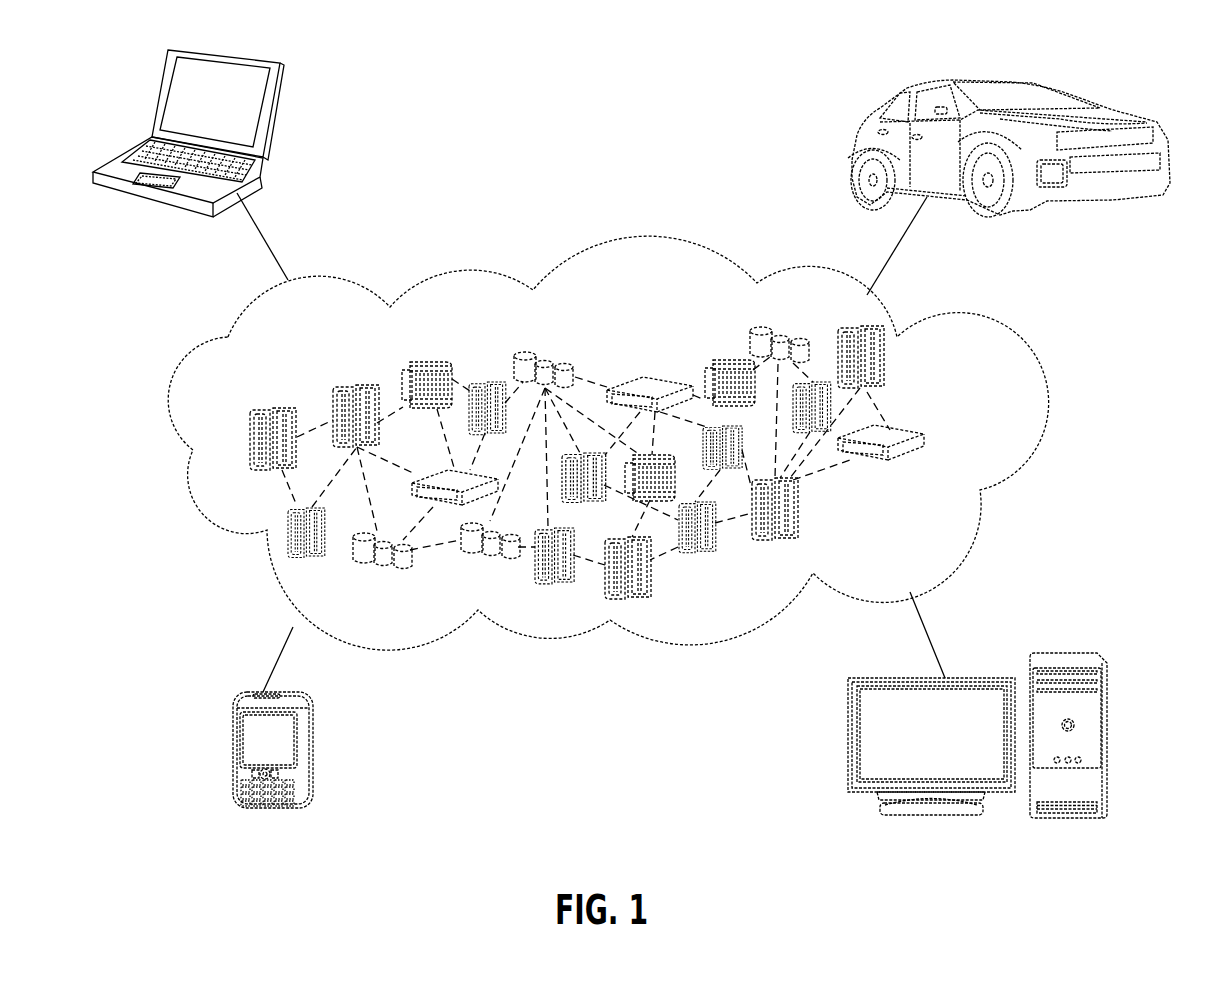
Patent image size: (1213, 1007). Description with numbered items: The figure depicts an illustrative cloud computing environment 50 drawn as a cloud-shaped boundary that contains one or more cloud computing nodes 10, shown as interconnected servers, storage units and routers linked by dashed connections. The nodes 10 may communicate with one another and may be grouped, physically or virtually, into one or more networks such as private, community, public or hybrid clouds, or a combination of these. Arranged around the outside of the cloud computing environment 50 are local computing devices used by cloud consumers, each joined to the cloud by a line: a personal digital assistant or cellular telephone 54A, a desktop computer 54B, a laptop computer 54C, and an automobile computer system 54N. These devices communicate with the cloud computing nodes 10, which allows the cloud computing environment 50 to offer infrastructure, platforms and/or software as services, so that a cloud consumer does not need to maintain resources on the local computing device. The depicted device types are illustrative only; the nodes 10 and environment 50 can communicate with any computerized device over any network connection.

The cloud computing nodes 10 is at (968, 441).
The cloud computing environment 50 is at (987, 352).
The personal digital assistant (PDA) or cellular telephone 54A is at (233, 753).
The desktop computer 54B is at (1072, 653).
The laptop computer 54C is at (273, 118).
The automobile computer system 54N is at (858, 127).